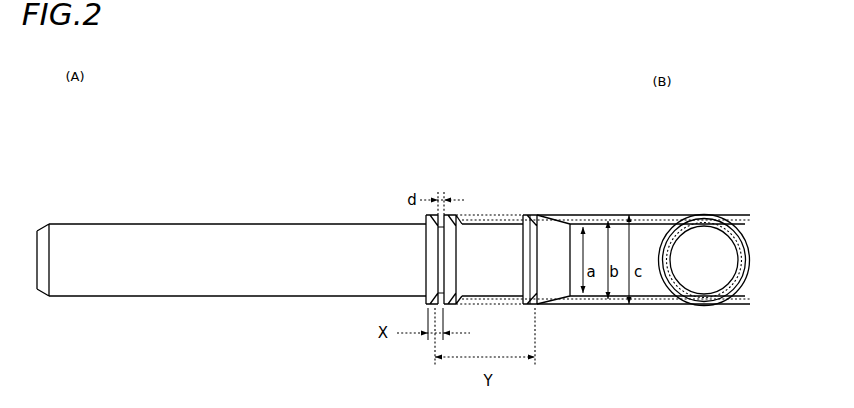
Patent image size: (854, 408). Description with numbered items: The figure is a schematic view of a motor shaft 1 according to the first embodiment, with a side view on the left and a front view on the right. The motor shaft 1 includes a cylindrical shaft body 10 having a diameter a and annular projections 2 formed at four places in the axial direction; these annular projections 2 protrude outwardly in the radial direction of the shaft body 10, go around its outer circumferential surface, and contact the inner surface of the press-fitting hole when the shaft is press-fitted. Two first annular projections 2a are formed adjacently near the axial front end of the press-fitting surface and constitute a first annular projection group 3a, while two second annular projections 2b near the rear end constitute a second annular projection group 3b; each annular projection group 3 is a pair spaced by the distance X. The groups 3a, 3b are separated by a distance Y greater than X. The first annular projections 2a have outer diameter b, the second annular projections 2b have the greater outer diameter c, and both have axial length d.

The motor shaft 1 is at (397, 199).
The shaft body 10 is at (92, 250).
The annular projections 2 is at (591, 198).
The first annular projections 2a is at (522, 216).
The second annular projections 2b is at (452, 213).
The annular projection group 3 is at (479, 218).
The first annular projection group 3a is at (533, 232).
The second annular projection group 3b is at (447, 191).